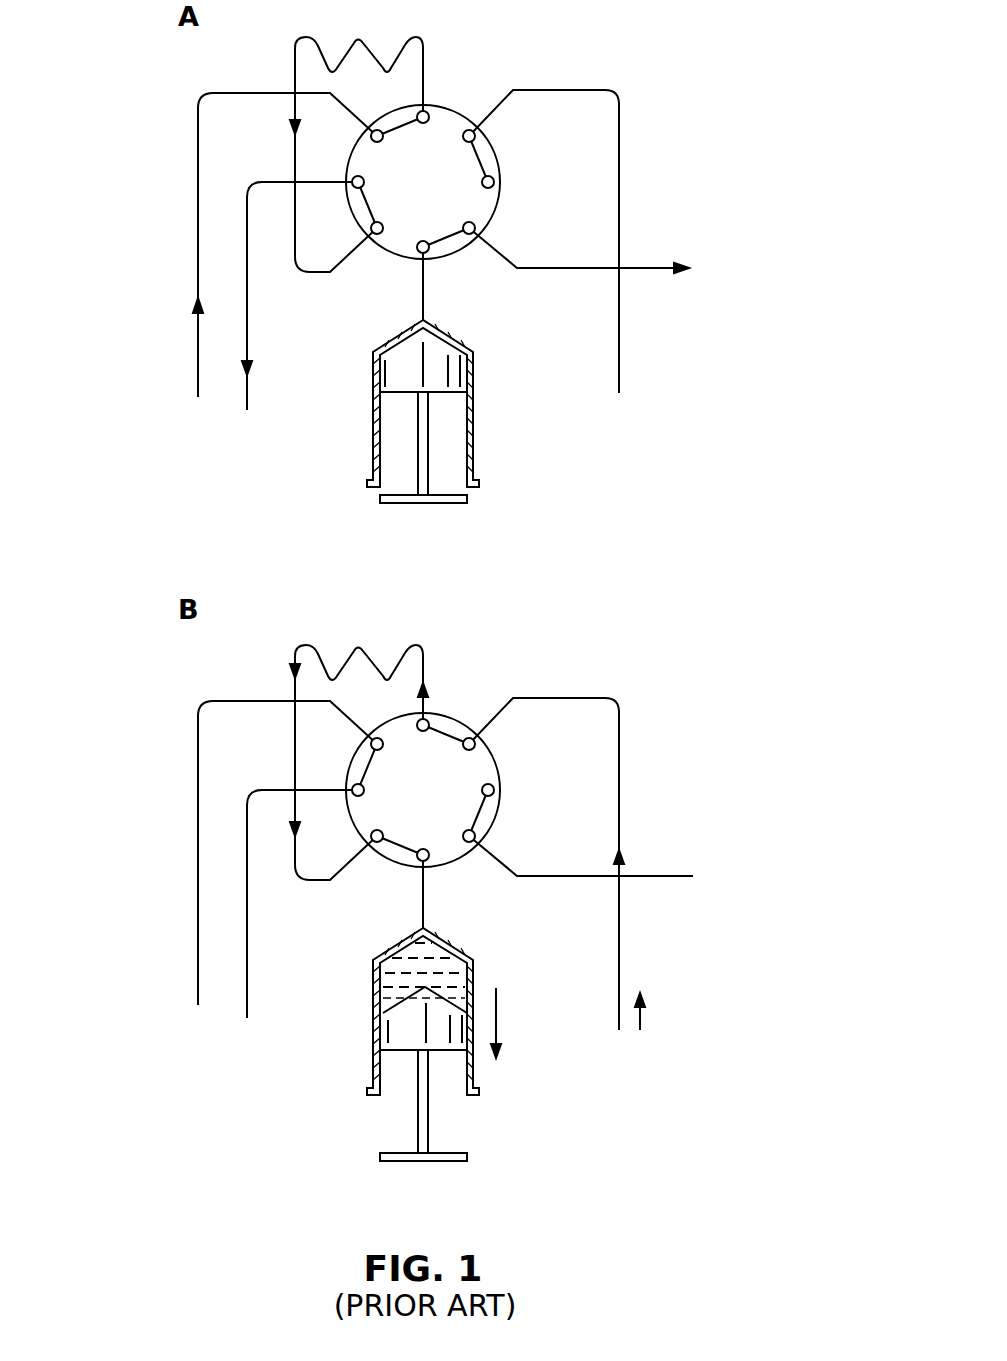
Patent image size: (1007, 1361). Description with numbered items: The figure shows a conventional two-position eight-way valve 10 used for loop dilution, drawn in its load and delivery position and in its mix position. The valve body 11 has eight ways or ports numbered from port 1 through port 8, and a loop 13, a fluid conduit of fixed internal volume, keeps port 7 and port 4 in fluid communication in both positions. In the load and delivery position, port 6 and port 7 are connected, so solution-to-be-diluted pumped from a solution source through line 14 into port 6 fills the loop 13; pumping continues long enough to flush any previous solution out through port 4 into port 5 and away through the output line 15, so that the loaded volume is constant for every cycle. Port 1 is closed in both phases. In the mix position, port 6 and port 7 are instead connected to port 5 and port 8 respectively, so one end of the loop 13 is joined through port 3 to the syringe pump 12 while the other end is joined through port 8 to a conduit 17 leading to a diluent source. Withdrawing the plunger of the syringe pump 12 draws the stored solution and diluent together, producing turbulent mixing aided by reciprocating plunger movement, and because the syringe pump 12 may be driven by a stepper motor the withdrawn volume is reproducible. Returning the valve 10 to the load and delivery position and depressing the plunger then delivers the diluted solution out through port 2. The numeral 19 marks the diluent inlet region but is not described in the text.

In FIG. 1a, the port 1 is at (479, 180).
In FIG. 1b, the port 1 is at (479, 788).
In FIG. 1a, the port 2 is at (463, 214).
In FIG. 1b, the port 2 is at (463, 822).
In FIG. 1a, the port 3 is at (423, 234).
In FIG. 1b, the port 3 is at (423, 842).
In FIG. 1a, the port 4 is at (384, 214).
In FIG. 1b, the port 4 is at (384, 822).
In FIG. 1a, the port 5 is at (365, 182).
In FIG. 1b, the port 5 is at (365, 790).
In FIG. 1a, the port 6 is at (383, 146).
In FIG. 1b, the port 6 is at (383, 754).
In FIG. 1a, the port 7 is at (423, 130).
In FIG. 1b, the port 7 is at (423, 738).
In FIG. 1a, the port 8 is at (461, 147).
In FIG. 1b, the port 8 is at (461, 755).
In FIG. 1a, the two-position eight-way valve 10 is at (424, 150).
In FIG. 1b, the two-position eight-way valve 10 is at (425, 749).
In FIG. 1a, the valve body 11 is at (450, 247).
In FIG. 1b, the valve body 11 is at (423, 805).
In FIG. 1a, the syringe pump 12 is at (373, 420).
In FIG. 1b, the syringe pump 12 is at (412, 1044).
In FIG. 1a, the loop 13 is at (313, 45).
In FIG. 1b, the loop 13 is at (359, 738).
In FIG. 1a, the line 14 is at (198, 238).
In FIG. 1b, the line 14 is at (262, 853).
In FIG. 1a, the output line 15 is at (248, 327).
In FIG. 1b, the output line 15 is at (302, 904).
In FIG. 1a, the conduit 17 is at (619, 119).
In FIG. 1b, the conduit 17 is at (569, 864).
In FIG. 1b, the diluent line 19 is at (581, 954).